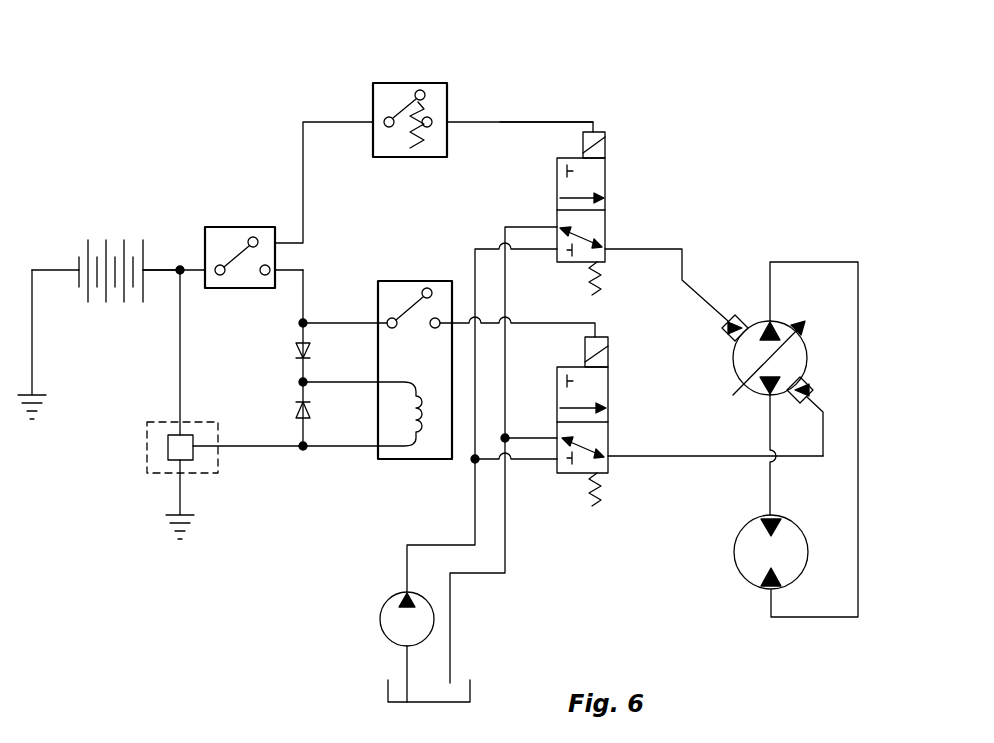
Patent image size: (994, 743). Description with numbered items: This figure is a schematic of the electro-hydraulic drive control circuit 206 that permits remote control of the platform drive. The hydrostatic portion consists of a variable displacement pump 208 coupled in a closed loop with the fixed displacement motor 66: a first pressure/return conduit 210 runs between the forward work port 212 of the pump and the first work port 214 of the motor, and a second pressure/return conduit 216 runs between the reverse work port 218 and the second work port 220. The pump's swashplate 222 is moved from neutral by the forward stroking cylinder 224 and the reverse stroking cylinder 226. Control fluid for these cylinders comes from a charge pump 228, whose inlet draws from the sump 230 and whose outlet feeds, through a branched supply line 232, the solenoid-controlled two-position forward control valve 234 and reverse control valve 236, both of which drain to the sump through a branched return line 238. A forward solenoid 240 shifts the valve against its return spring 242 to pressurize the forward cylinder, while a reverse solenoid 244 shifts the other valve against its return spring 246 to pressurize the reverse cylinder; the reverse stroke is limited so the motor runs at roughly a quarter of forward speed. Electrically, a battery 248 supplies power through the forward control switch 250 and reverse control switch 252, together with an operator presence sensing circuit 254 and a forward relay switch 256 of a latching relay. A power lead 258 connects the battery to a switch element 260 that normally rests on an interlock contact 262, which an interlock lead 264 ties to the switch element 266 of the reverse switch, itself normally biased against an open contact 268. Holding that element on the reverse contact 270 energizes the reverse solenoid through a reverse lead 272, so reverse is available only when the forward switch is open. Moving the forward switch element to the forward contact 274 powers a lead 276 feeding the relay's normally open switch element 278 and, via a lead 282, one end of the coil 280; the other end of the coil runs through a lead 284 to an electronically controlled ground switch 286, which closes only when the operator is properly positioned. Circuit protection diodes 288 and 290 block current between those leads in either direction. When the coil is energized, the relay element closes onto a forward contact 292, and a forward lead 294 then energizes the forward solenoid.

The electro-hydraulic drive control circuit 206 is at (232, 135).
The variable displacement pump 208 is at (738, 362).
The first pressure/return conduit 210 is at (858, 488).
The forward work port 212 is at (766, 320).
The first work port 214 is at (768, 588).
The second pressure/return conduit 216 is at (770, 487).
The reverse work port 218 is at (765, 400).
The second work port 220 is at (757, 515).
The swashplate 222 is at (748, 361).
The forward stroking cylinder 224 is at (858, 338).
The reverse stroking cylinder 226 is at (722, 328).
The charge pump 228 is at (380, 622).
The sump 230 is at (386, 700).
The branched supply line 232 is at (403, 572).
The forward control valve 234 is at (559, 474).
The reverse control valve 236 is at (557, 178).
The branched return line 238 is at (455, 617).
The forward solenoid 240 is at (594, 426).
The return spring 242 is at (591, 507).
The reverse solenoid 244 is at (583, 206).
The return spring 246 is at (589, 284).
The battery 248 is at (107, 302).
The forward control switch 250 is at (264, 256).
The reverse control switch 252 is at (466, 112).
The operator presence sensing circuit 254 is at (147, 462).
The forward relay switch 256 is at (377, 381).
The power lead 258 is at (168, 268).
The switch element 260 is at (230, 262).
The interlock contact 262 is at (255, 237).
The interlock lead 264 is at (325, 121).
The switch element 266 is at (405, 112).
The open contact 268 is at (421, 90).
The reverse contact 270 is at (427, 130).
The reverse lead 272 is at (575, 120).
The forward contact 274 is at (271, 266).
The lead 276 is at (341, 319).
The switch element 278 is at (410, 308).
The coil 280 is at (437, 460).
The lead 282 is at (338, 381).
The lead 284 is at (237, 448).
The ground switch 286 is at (167, 443).
The circuit protection diode 288 is at (311, 410).
The circuit protection diode 290 is at (298, 352).
The forward contact 292 is at (458, 318).
The forward lead 294 is at (595, 312).
The fixed displacement motor 66 is at (734, 564).